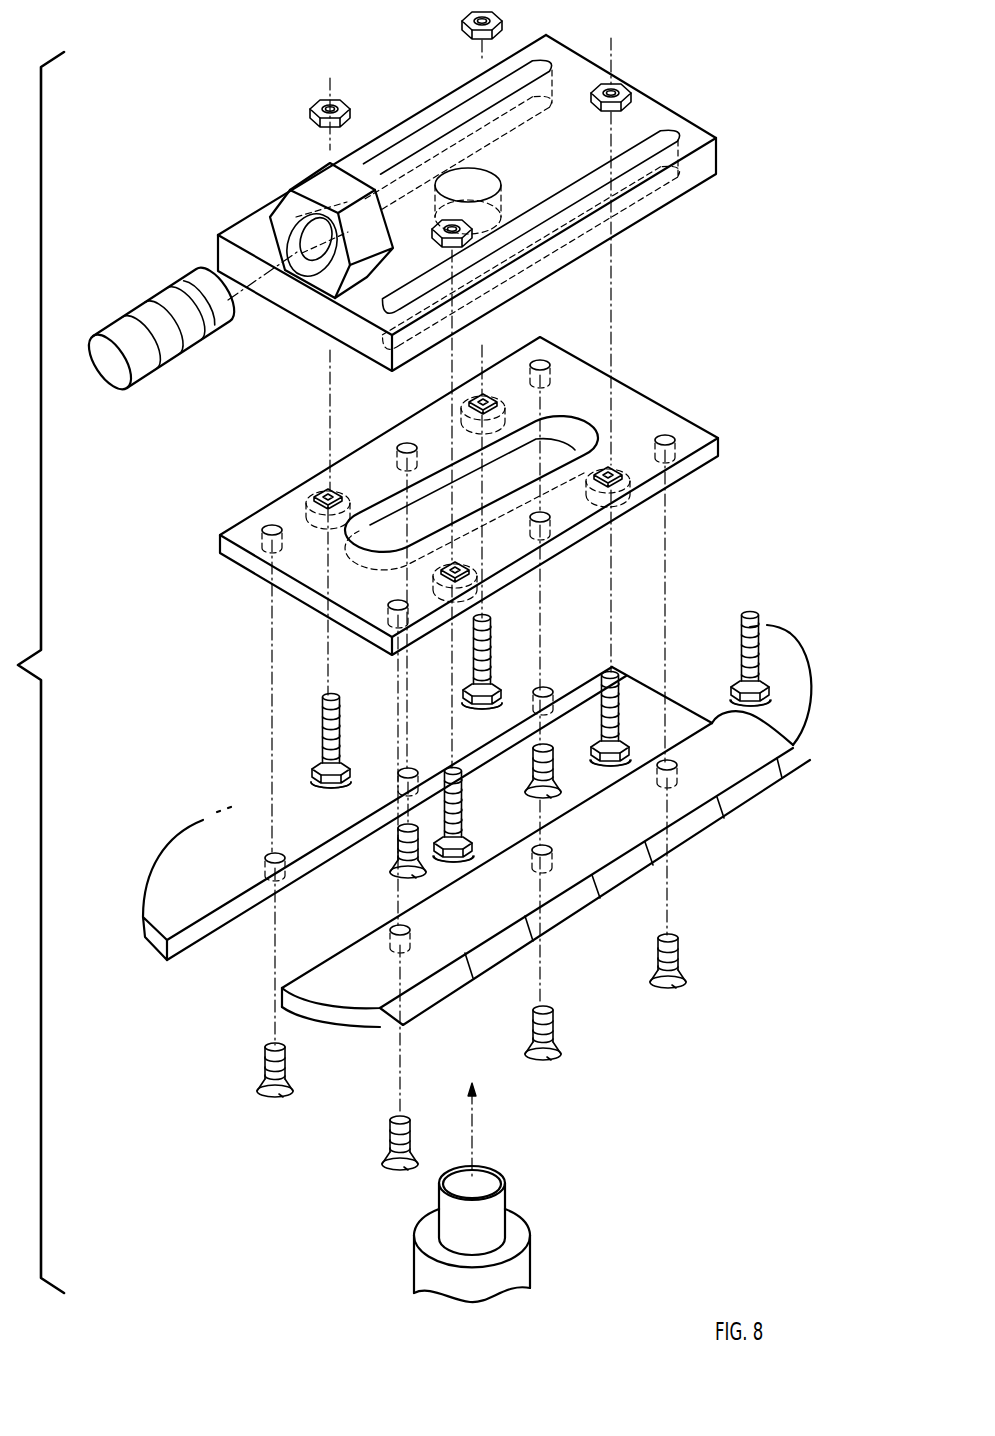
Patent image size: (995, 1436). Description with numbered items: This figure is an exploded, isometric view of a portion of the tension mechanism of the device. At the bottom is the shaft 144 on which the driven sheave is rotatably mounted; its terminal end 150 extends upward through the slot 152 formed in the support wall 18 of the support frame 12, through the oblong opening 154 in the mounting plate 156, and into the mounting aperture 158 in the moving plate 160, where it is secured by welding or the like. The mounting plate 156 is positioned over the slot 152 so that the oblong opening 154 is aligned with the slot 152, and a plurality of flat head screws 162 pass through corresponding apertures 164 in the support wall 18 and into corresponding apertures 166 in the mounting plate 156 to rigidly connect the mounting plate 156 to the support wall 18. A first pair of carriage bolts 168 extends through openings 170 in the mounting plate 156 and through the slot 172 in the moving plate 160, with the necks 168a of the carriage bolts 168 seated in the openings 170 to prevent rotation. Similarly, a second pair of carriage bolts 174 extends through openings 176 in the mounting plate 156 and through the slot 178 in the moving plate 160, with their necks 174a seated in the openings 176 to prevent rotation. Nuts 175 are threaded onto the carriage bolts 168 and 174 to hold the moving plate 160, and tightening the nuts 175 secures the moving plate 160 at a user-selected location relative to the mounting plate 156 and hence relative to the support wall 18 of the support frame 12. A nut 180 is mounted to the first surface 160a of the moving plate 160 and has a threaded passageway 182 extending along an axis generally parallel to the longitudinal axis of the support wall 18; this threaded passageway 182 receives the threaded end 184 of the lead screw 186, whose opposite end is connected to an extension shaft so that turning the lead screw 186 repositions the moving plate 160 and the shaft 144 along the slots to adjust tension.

The support frame 12 is at (792, 693).
The support wall 18 is at (441, 975).
The shaft 144 is at (522, 1275).
The terminal end 150 is at (485, 1220).
The slot 152 is at (800, 744).
The oblong opening 154 is at (540, 416).
The mounting plate 156 is at (622, 395).
The mounting aperture 158 is at (478, 170).
The moving plate 160 is at (690, 120).
The first surface 160a is at (598, 141).
The flat head screws 162 is at (533, 773).
The apertures 164 is at (549, 689).
The apertures 166 is at (550, 362).
The first pair of carriage bolts 168 is at (491, 630).
The necks 168a is at (498, 698).
The openings 170 is at (477, 397).
The slot 172 is at (420, 146).
The second pair of carriage bolts 174 is at (625, 745).
The necks 174a is at (450, 862).
The nuts 175 is at (463, 14).
The openings 176 is at (610, 470).
The slot 178 is at (660, 150).
The nut 180 is at (278, 200).
The threaded passageway 182 is at (296, 229).
The threaded end 184 is at (180, 278).
The lead screw 186 is at (132, 323).